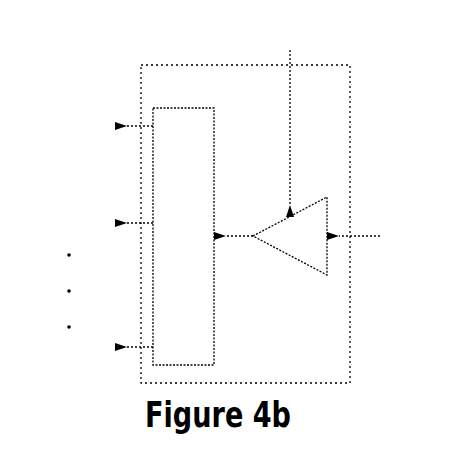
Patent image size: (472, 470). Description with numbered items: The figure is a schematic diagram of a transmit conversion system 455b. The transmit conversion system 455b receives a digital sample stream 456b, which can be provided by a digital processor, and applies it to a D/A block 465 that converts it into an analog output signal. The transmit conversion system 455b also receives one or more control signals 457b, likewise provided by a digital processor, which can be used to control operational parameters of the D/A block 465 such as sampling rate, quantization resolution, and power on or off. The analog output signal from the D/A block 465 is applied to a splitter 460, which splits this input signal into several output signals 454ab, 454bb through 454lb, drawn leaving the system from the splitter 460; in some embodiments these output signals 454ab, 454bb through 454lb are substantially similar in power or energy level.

The transmit conversion system 455b is at (232, 211).
The splitter 460 is at (184, 222).
The D/A block 465 is at (276, 249).
The control signals 457b is at (289, 115).
The digital sample stream 456b is at (389, 238).
The output signal 454ab is at (93, 125).
The output signal 454bb is at (93, 225).
The output signal 454lb is at (96, 354).